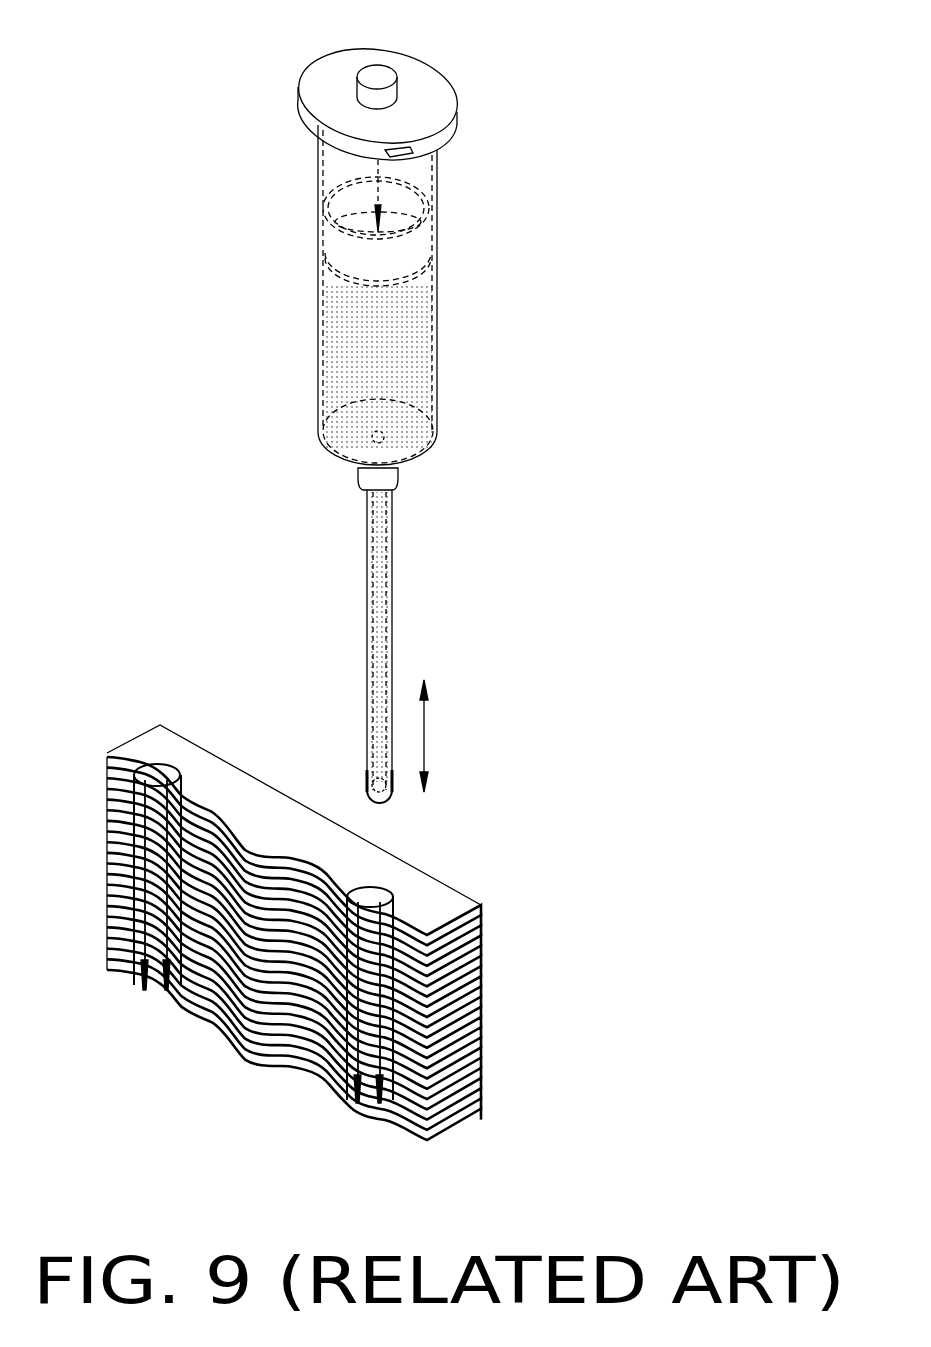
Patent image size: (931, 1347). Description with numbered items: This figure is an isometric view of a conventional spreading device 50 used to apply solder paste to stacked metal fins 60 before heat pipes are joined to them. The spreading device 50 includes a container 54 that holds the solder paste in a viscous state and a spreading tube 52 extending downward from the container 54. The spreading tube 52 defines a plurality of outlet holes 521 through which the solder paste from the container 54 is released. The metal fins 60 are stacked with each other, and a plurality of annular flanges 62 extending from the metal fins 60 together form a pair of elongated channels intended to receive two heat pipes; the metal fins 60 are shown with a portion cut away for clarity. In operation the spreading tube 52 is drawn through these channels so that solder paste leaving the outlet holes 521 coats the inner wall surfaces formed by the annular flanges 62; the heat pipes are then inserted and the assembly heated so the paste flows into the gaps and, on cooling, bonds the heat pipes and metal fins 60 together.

The spreading device 50 is at (283, 55).
The spreading tube 52 is at (367, 548).
The outlet holes 521 is at (368, 772).
The container 54 is at (317, 172).
The metal fins 60 is at (455, 908).
The annular flanges 62 is at (395, 905).